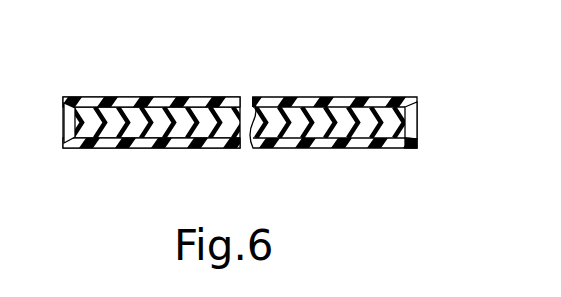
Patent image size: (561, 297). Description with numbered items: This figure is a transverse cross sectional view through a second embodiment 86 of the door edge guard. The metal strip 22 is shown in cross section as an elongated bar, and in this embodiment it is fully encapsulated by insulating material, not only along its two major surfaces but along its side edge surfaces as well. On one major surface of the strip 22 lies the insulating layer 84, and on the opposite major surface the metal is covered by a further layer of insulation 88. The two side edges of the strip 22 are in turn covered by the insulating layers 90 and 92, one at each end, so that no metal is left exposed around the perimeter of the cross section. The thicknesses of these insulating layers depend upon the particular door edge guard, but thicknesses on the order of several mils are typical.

The strip 22 is at (273, 118).
The insulating layer 84 is at (172, 98).
The second embodiment 86 is at (92, 89).
The layer of insulation 88 is at (126, 141).
The insulating layer 90 is at (71, 125).
The insulating layer 92 is at (410, 115).